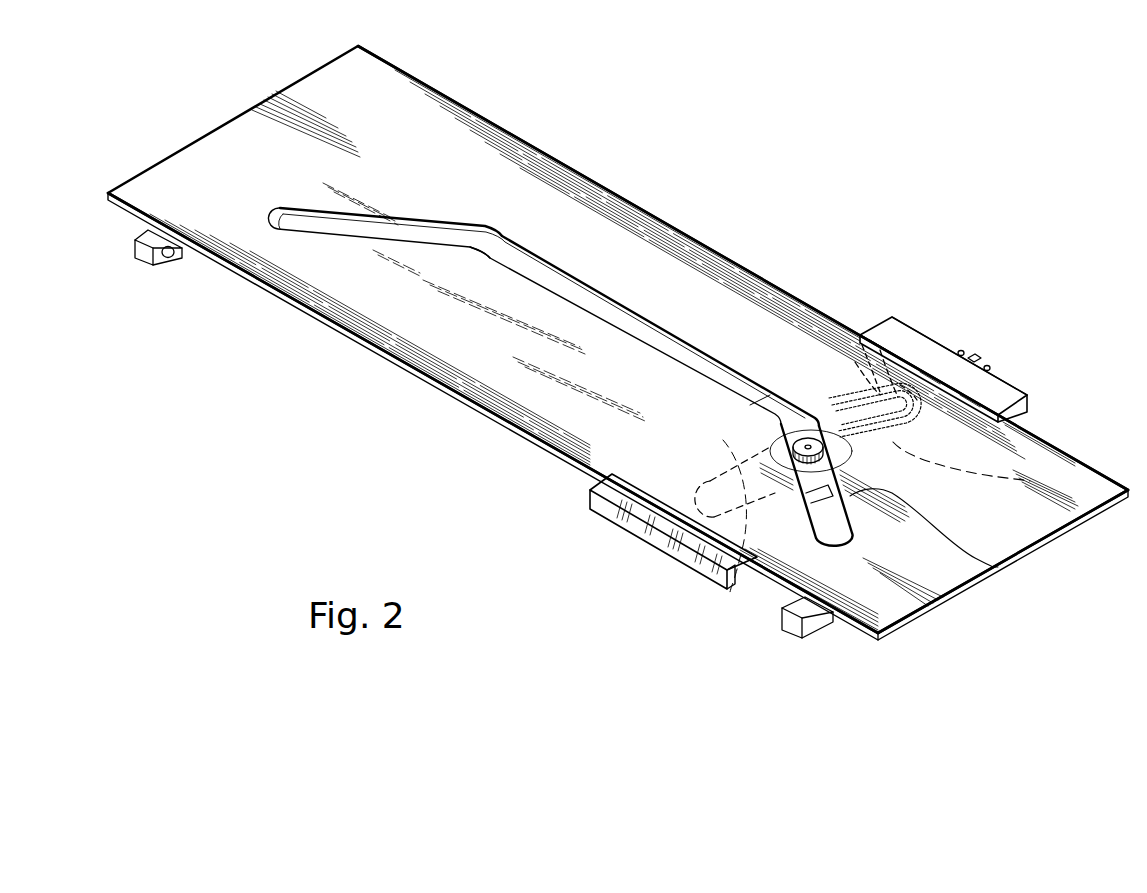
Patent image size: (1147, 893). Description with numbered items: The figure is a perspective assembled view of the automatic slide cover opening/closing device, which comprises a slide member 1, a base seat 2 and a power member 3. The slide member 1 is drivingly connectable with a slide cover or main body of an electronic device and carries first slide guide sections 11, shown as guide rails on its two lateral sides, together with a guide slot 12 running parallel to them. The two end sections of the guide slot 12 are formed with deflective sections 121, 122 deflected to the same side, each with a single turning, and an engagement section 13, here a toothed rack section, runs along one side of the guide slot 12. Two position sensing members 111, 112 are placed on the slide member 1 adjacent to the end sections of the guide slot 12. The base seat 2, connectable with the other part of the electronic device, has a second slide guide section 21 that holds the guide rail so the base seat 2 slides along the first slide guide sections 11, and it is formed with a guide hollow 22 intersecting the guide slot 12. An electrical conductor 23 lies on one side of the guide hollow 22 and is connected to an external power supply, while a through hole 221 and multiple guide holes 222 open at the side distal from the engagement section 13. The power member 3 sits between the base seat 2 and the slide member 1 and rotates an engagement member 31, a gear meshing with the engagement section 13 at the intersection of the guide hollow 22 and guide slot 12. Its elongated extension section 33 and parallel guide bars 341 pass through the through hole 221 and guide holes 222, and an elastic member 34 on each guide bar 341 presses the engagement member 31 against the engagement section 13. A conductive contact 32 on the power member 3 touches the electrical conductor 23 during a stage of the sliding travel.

The slide member 1 is at (740, 293).
The first slide guide section 11 is at (550, 156).
The position sensing member 111 is at (780, 614).
The position sensing member 112 is at (147, 263).
The guide slot 12 is at (580, 293).
The deflective section 121 is at (1000, 566).
The deflective section 122 is at (388, 237).
The engagement section 13 is at (470, 247).
The base seat 2 is at (640, 555).
The second slide guide section 21 is at (1003, 437).
The guide hollow 22 is at (723, 440).
The through hole 221 is at (923, 363).
The guide hole 222 is at (898, 397).
The electrical conductor 23 is at (1093, 507).
The power member 3 is at (786, 468).
The engagement member 31 is at (807, 437).
The conductive contact 32 is at (808, 492).
The extension section 33 is at (917, 392).
The elastic member 34 is at (930, 397).
The guide bar 341 is at (877, 383).